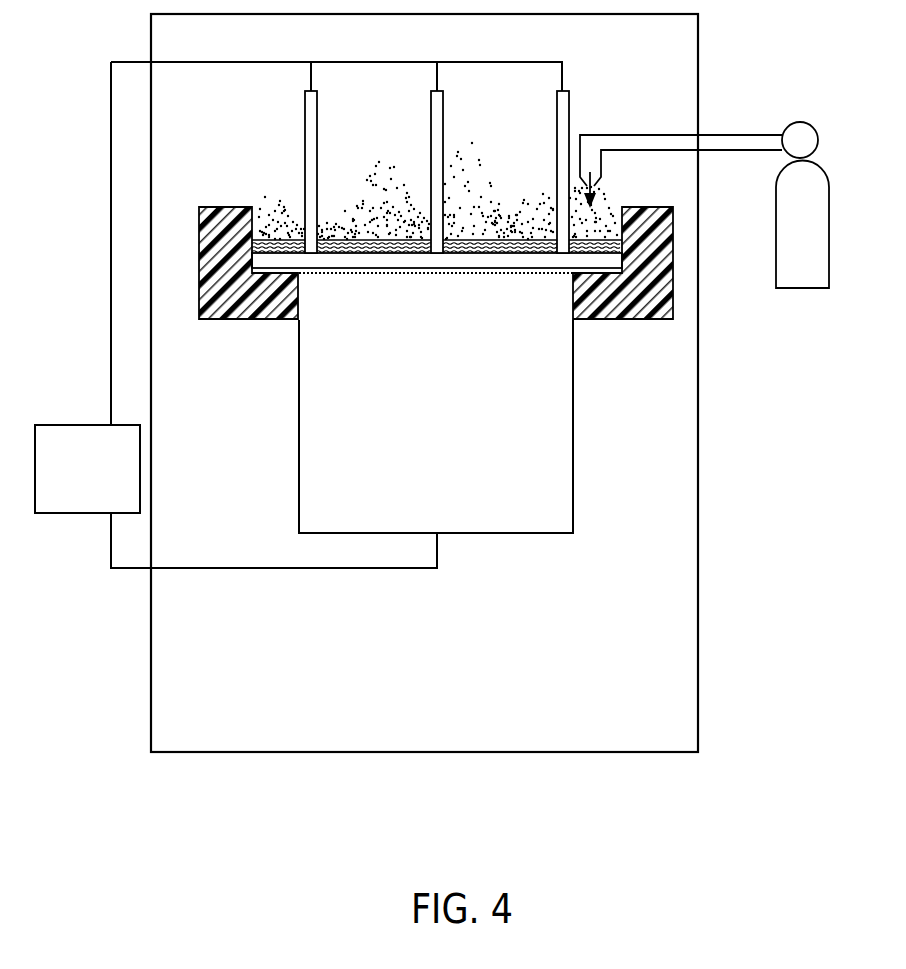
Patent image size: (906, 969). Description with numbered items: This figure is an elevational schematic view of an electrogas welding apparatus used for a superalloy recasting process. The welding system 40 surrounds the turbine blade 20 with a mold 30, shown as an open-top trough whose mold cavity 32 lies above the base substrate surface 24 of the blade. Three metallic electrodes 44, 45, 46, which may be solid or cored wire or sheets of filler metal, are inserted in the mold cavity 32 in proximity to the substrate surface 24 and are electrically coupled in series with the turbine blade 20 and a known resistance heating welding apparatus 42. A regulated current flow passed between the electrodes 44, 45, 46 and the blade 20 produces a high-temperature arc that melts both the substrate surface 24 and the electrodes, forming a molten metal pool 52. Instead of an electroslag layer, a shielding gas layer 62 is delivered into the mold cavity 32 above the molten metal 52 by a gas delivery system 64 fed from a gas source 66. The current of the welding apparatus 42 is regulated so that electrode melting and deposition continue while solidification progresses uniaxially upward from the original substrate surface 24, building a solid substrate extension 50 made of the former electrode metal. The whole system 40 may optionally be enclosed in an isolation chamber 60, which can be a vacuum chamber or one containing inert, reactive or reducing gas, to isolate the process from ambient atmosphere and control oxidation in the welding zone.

The turbine blade 20 is at (603, 448).
The base substrate surface 24 is at (540, 273).
The mold 30 is at (155, 233).
The mold cavity 32 is at (268, 214).
The system 40 is at (368, 816).
The welding apparatus 42 is at (52, 521).
The electrode 44 is at (312, 132).
The electrode 45 is at (438, 128).
The electrode 46 is at (565, 114).
The solid substrate extension 50 is at (242, 246).
The molten metal pool 52 is at (262, 261).
The isolation chamber 60 is at (566, 758).
The shielding gas layer 62 is at (383, 222).
The gas delivery system 64 is at (746, 145).
The gas source 66 is at (783, 298).